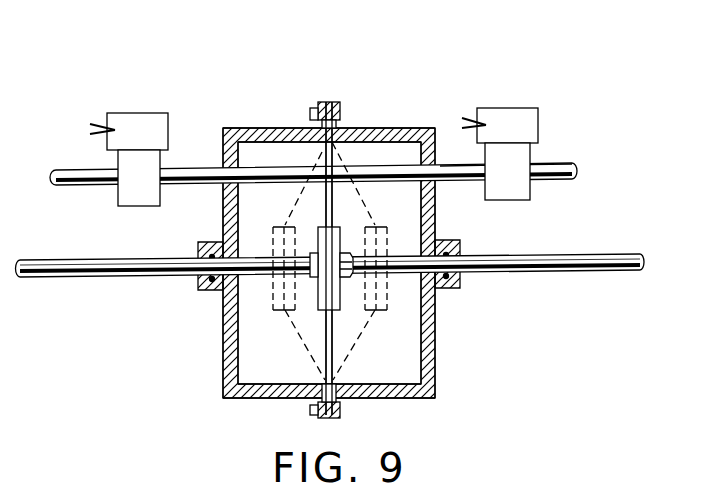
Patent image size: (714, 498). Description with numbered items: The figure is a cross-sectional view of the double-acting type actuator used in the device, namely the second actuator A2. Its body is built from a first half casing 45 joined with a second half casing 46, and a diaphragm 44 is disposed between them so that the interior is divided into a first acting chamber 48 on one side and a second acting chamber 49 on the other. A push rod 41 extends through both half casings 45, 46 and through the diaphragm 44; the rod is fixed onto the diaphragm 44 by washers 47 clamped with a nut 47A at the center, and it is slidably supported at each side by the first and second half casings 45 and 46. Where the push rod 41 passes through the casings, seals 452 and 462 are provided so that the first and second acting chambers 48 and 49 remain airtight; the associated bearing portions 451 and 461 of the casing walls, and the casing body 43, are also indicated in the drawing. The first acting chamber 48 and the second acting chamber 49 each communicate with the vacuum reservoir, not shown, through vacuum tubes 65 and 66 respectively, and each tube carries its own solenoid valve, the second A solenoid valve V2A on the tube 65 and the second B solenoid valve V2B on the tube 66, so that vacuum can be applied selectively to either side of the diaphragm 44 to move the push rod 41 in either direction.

The push rod 41 is at (130, 277).
The housing 43 is at (437, 399).
The diaphragm 44 is at (327, 170).
The first half casing 45 is at (238, 128).
The left bearing 451 is at (200, 256).
The seal 452 is at (212, 257).
The second half casing 46 is at (426, 128).
The right bearing 461 is at (447, 278).
The seal 462 is at (444, 242).
The washers 47 is at (318, 300).
The nut 47A is at (350, 253).
The first acting chamber 48 is at (248, 313).
The second acting chamber 49 is at (408, 336).
The vacuum tube 65 is at (80, 188).
The vacuum tube 66 is at (555, 182).
The second A solenoid valve V2A is at (132, 122).
The second B solenoid valve V2B is at (522, 120).
The second actuator A2 is at (357, 88).